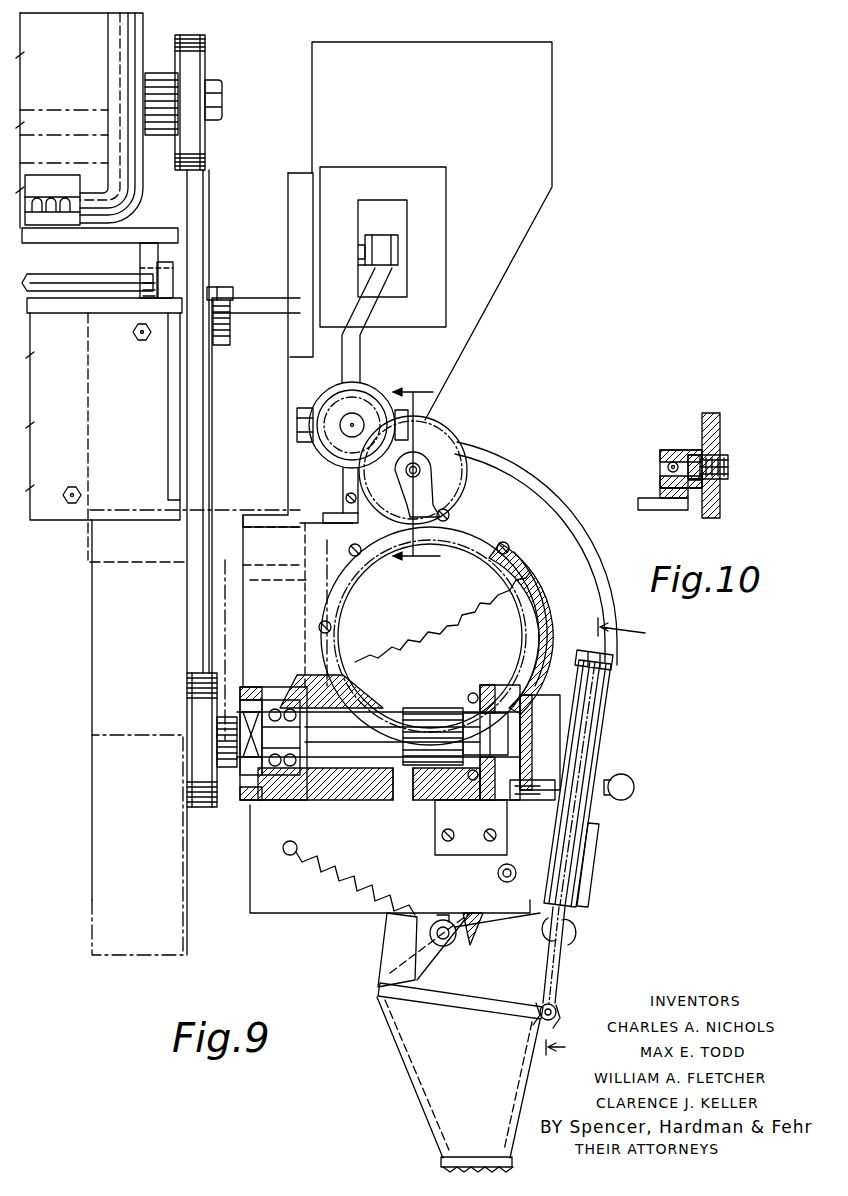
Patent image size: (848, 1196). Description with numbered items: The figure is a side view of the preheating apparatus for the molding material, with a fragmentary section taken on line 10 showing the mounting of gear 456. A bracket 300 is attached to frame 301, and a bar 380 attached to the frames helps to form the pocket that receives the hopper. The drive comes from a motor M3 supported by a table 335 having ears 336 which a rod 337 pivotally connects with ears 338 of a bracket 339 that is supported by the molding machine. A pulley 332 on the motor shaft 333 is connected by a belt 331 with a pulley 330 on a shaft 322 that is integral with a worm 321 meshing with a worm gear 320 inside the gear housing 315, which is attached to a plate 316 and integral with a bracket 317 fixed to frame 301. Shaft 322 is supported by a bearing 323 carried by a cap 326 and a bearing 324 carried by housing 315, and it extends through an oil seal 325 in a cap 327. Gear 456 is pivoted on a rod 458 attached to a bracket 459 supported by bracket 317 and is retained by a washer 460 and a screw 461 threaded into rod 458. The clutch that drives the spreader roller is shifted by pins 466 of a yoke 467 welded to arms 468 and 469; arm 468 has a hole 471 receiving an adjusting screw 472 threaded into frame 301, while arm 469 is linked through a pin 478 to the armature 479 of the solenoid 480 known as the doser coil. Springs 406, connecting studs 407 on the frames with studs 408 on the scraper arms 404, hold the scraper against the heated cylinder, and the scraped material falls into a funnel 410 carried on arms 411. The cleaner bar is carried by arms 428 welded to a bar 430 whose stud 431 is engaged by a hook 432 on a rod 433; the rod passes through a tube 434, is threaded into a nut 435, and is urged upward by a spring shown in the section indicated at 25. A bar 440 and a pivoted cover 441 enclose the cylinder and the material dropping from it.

In FIG. 9, the motor M3 is at (133, 25).
In FIG. 9, the shaft 333 is at (222, 100).
In FIG. 9, the pulley 332 is at (203, 152).
In FIG. 9, the table 335 is at (153, 228).
In FIG. 9, the ears 338 is at (172, 265).
In FIG. 9, the bracket 300 is at (203, 297).
In FIG. 9, the rod 337 is at (55, 274).
In FIG. 9, the ears 336 is at (142, 257).
In FIG. 9, the bracket 339 is at (83, 313).
In FIG. 9, the solenoid 480 is at (424, 167).
In FIG. 9, the armature 479 is at (396, 240).
In FIG. 9, the pin 478 is at (363, 250).
In FIG. 9, the bar 380 is at (548, 100).
In FIG. 9, the arm 469 is at (362, 352).
In FIG. 9, the frame 301 is at (290, 376).
In FIG. 9, the pins 466 is at (297, 428).
In FIG. 9, the yoke 467 is at (331, 462).
In FIG. 9, the hole 471 is at (343, 498).
In FIG. 9, the arm 468 is at (405, 478).
In FIG. 9, the screw 472 is at (354, 512).
In FIG. 9, the section line 10 is at (416, 475).
In FIG. 9, the gear 456 is at (448, 430).
In FIG. 10, the gear 456 is at (710, 413).
In FIG. 9, the rod 458 is at (440, 480).
In FIG. 10, the rod 458 is at (660, 465).
In FIG. 9, the cover 441 is at (517, 460).
In FIG. 9, the plate 316 is at (497, 545).
In FIG. 9, the gear housing 315 is at (540, 600).
In FIG. 9, the worm gear 320 is at (518, 637).
In FIG. 9, the bracket 317 is at (252, 545).
In FIG. 9, the belt 331 is at (197, 615).
In FIG. 9, the shaft 322 is at (384, 722).
In FIG. 9, the bearing 323 is at (495, 700).
In FIG. 9, the worm 321 is at (428, 730).
In FIG. 9, the section line 25 is at (608, 839).
In FIG. 9, the nut 435 is at (608, 665).
In FIG. 9, the tube 434 is at (612, 695).
In FIG. 9, the cap 327 is at (226, 770).
In FIG. 9, the oil seal 325 is at (250, 775).
In FIG. 9, the bearing 324 is at (293, 782).
In FIG. 9, the cap 326 is at (505, 800).
In FIG. 9, the pulley 330 is at (187, 800).
In FIG. 9, the studs 407 is at (278, 863).
In FIG. 9, the springs 406 is at (348, 870).
In FIG. 9, the arms 404 is at (447, 915).
In FIG. 9, the bar 440 is at (597, 845).
In FIG. 9, the arms 428 is at (387, 955).
In FIG. 9, the studs 408 is at (449, 941).
In FIG. 9, the arms 411 is at (566, 936).
In FIG. 9, the rod 433 is at (553, 990).
In FIG. 9, the stud 431 is at (555, 1018).
In FIG. 9, the bar 430 is at (493, 1007).
In FIG. 9, the hook 432 is at (538, 1030).
In FIG. 9, the funnel 410 is at (400, 1050).
In FIG. 10, the washer 460 is at (715, 455).
In FIG. 10, the screw 461 is at (726, 466).
In FIG. 10, the bracket 459 is at (673, 510).